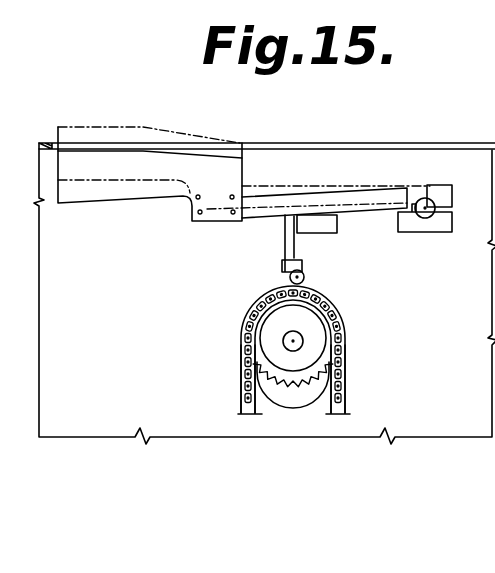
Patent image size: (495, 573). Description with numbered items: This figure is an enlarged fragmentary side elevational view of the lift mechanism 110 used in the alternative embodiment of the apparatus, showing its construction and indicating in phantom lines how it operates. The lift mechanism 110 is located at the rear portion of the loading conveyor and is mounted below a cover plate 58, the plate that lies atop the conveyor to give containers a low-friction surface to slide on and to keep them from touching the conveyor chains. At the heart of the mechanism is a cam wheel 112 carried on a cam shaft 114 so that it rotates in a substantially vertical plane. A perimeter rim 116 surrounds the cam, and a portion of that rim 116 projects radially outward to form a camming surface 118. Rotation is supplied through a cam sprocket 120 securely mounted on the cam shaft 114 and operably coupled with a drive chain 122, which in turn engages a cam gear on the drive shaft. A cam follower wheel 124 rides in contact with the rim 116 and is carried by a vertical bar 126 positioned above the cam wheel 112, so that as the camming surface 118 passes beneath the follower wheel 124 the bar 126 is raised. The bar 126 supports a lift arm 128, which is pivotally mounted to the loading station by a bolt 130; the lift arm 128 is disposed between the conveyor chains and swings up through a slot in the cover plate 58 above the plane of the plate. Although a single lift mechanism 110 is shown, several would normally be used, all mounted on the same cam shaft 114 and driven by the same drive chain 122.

The cover plate 58 is at (313, 143).
The lift mechanism 110 is at (382, 283).
The cam wheel 112 is at (241, 331).
The cam shaft 114 is at (305, 338).
The perimeter rim 116 is at (332, 303).
The camming surface 118 is at (307, 408).
The cam sprocket 120 is at (343, 372).
The drive chain 122 is at (243, 400).
The cam follower wheel 124 is at (289, 275).
The vertical bar 126 is at (296, 245).
The lift arm 128 is at (88, 132).
The bolt 130 is at (424, 205).